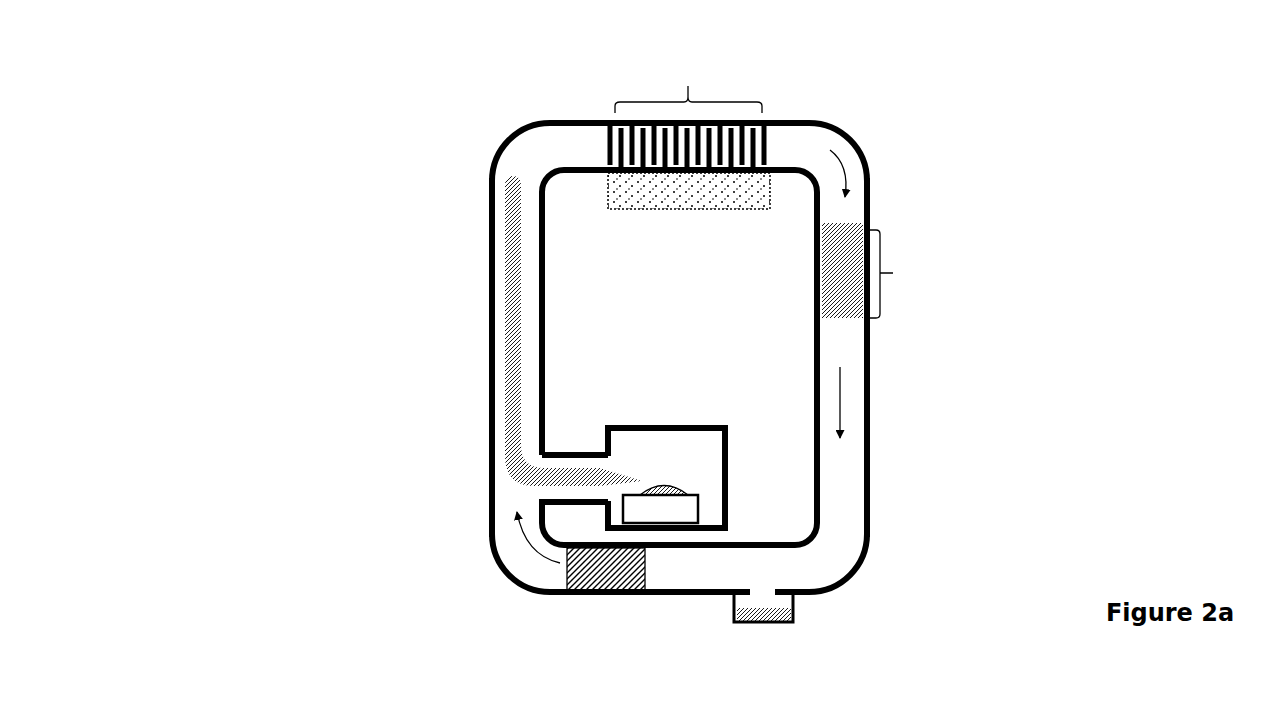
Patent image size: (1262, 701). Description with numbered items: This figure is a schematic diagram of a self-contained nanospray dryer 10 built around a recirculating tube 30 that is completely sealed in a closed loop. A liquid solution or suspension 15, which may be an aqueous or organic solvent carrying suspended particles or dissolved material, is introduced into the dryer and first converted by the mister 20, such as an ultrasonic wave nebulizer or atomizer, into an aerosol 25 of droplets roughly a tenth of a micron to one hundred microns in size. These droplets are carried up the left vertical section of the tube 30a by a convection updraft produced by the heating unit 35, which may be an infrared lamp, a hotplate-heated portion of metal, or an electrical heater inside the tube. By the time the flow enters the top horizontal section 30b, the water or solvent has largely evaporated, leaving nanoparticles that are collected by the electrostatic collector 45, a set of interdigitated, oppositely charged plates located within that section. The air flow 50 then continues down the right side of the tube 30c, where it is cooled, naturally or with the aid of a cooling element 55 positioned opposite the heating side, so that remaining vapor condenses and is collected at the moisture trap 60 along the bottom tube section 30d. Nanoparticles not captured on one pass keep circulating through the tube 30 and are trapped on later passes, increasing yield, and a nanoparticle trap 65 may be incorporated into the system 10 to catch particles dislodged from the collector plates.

The self-contained nanospray dryer 10 is at (385, 181).
The liquid solution or suspension 15 is at (702, 500).
The mister 20 is at (656, 425).
The aerosol 25 is at (504, 432).
The recirculating tube 30 is at (489, 552).
The left vertical section of the tube 30a is at (487, 345).
The top horizontal section 30b is at (572, 117).
The right side of the tube 30c is at (860, 404).
The bottom tube section 30d is at (681, 598).
The heating unit 35 is at (606, 578).
The electrostatic collector 45 is at (708, 82).
The air flow 50 is at (834, 152).
The cooling element 55 is at (895, 258).
The moisture trap 60 is at (763, 624).
The nanoparticle trap 65 is at (687, 213).